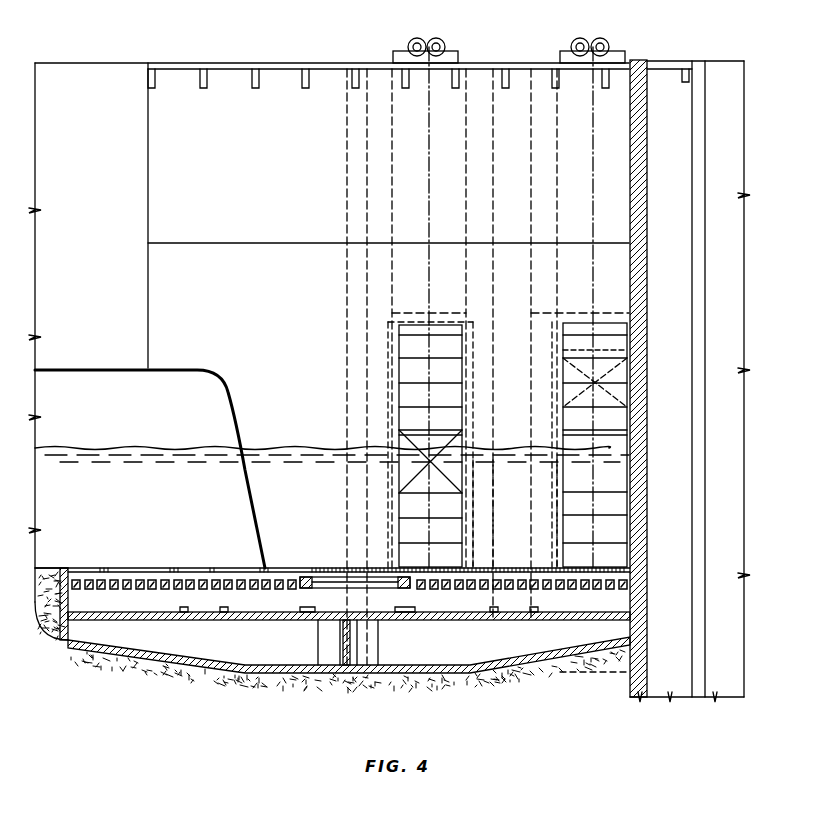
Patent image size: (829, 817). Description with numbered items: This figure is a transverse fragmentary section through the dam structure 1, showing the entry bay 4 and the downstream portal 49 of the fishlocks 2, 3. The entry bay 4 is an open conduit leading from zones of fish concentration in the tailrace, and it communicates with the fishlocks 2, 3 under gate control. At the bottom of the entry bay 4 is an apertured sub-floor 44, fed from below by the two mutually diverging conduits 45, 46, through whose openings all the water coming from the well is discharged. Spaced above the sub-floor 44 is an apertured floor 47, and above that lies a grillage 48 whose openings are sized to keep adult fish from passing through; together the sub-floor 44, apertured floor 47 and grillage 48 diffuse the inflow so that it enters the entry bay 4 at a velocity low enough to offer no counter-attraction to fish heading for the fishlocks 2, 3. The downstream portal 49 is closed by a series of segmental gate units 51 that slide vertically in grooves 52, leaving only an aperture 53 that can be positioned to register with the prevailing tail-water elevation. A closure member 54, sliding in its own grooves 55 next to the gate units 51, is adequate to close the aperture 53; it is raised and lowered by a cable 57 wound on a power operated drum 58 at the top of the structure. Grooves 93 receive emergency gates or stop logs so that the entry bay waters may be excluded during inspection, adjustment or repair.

The dam structure 1 is at (389, 381).
The fishlock 2 is at (618, 78).
The fishlock 3 is at (398, 78).
The entry bay 4 is at (171, 469).
The apertured sub-floor 44 is at (274, 612).
The conduit 45 is at (360, 642).
The conduit 46 is at (329, 642).
The apertured floor 47 is at (440, 586).
The grillage 48 is at (330, 567).
The downstream portal 49 is at (559, 418).
The segmental gate units 51 is at (567, 343).
The grooves 52 is at (557, 530).
The aperture 53 is at (415, 488).
The closure member 54 is at (572, 405).
The grooves 55 is at (555, 502).
The cable 57 is at (430, 231).
The power operated drum 58 is at (428, 44).
The grooves 93 is at (556, 556).